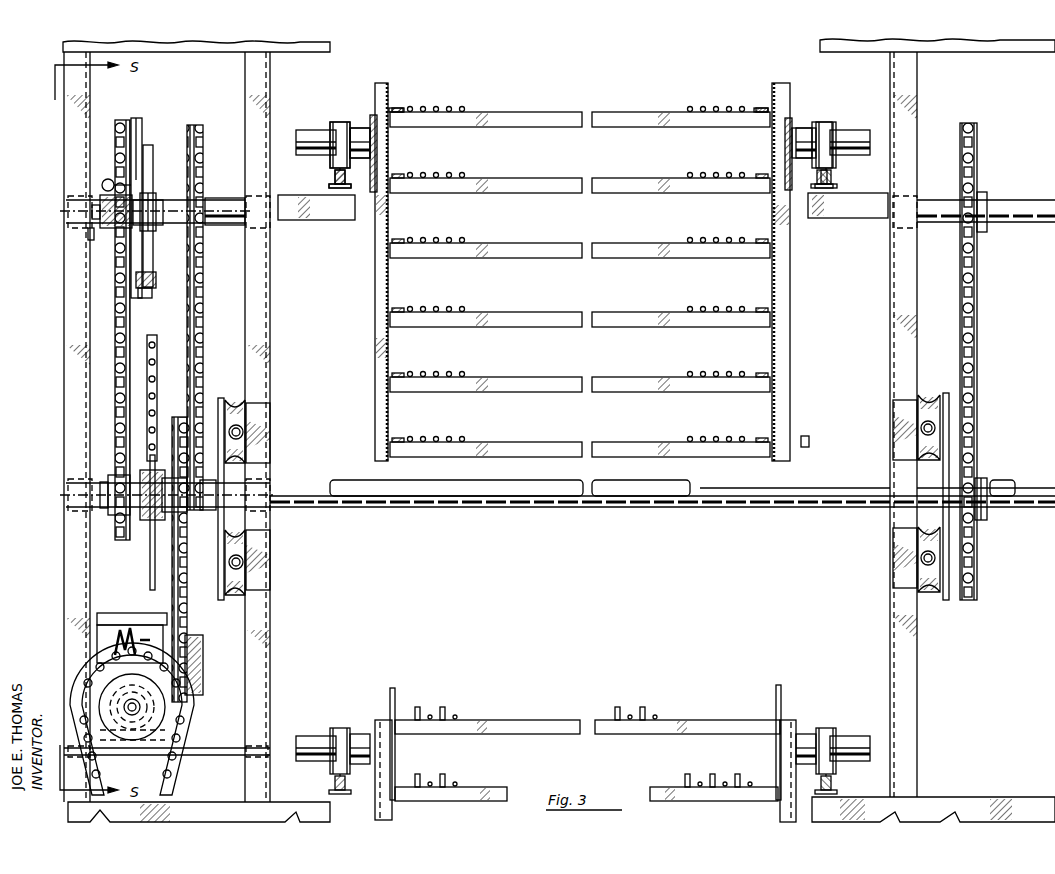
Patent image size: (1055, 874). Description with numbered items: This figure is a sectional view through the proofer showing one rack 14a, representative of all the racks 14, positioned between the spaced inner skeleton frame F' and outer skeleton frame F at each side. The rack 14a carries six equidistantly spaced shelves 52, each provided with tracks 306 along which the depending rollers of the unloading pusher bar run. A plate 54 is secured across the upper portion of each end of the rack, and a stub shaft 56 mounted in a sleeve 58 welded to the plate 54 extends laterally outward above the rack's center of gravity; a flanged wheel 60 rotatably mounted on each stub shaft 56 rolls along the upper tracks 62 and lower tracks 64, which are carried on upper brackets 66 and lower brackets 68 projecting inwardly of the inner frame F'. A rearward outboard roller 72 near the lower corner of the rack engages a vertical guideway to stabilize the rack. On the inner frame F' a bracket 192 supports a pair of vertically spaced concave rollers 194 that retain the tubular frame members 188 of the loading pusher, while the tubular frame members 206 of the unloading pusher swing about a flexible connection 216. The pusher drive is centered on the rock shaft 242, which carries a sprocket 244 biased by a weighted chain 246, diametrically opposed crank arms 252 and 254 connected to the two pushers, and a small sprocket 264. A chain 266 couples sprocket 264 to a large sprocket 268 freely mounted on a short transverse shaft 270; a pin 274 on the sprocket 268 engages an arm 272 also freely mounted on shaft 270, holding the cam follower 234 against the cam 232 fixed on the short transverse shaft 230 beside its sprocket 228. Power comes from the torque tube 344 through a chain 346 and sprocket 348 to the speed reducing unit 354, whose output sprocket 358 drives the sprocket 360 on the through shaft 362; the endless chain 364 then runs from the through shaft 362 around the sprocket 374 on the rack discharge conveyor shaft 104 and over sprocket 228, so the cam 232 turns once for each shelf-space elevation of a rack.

The racks 14 is at (700, 110).
The rack 14a is at (375, 292).
The shelves 52 is at (482, 112).
The plate 54 is at (372, 115).
The stub shaft 56 is at (306, 130).
The sleeve 58 is at (357, 128).
The flanged wheel 60 is at (338, 122).
The upper tracks 62 is at (335, 177).
The lower tracks 64 is at (338, 790).
The upper brackets 66 is at (322, 220).
The lower brackets 68 is at (392, 810).
The rearward outboard roller 72 is at (808, 440).
The rack discharge conveyor shaft 104 is at (1030, 222).
The tubular frame members 188 is at (243, 432).
The bracket 192 is at (260, 410).
The rear concave rollers 194 is at (240, 405).
The tubular frame members 206 is at (243, 562).
The flexible connection 216 is at (242, 540).
The sprocket 228 is at (203, 160).
The short transverse shaft 230 is at (214, 198).
The cam 232 is at (137, 118).
The cam follower 234 is at (140, 280).
The rock shaft 242 is at (660, 507).
The sprocket 244 is at (152, 545).
The chain 246 is at (147, 345).
The crank arm 252 is at (221, 398).
The crank arm 254 is at (221, 600).
The small sprocket 264 is at (115, 480).
The chain 266 is at (115, 355).
The large sprocket 268 is at (110, 208).
The short transverse shaft 270 is at (218, 226).
The arm 272 is at (155, 240).
The pin 274 is at (150, 298).
The tracks 306 is at (400, 108).
The torque tube 344 is at (220, 755).
The chain 346 is at (175, 738).
The sprocket 348 is at (110, 680).
The speed reducing unit 354 is at (128, 613).
The sprocket 358 is at (200, 682).
The sprocket 360 is at (162, 440).
The through shaft 362 is at (336, 482).
The endless chain 364 is at (203, 342).
The sprocket 374 is at (985, 192).
The outer skeleton frame F is at (536, 430).
The inner skeleton frame F' is at (592, 427).